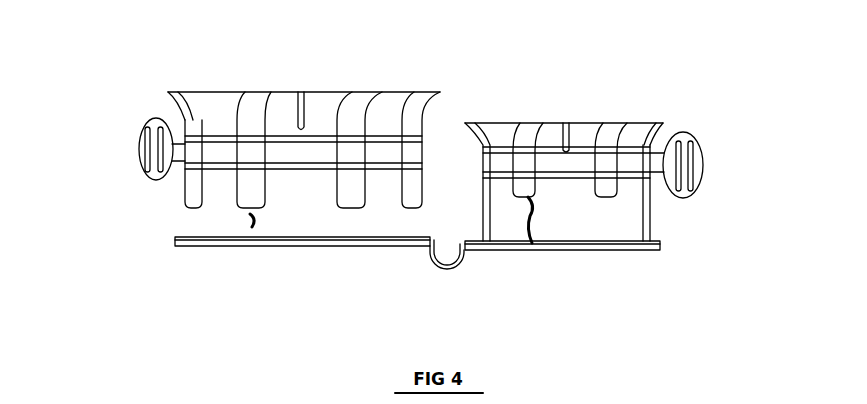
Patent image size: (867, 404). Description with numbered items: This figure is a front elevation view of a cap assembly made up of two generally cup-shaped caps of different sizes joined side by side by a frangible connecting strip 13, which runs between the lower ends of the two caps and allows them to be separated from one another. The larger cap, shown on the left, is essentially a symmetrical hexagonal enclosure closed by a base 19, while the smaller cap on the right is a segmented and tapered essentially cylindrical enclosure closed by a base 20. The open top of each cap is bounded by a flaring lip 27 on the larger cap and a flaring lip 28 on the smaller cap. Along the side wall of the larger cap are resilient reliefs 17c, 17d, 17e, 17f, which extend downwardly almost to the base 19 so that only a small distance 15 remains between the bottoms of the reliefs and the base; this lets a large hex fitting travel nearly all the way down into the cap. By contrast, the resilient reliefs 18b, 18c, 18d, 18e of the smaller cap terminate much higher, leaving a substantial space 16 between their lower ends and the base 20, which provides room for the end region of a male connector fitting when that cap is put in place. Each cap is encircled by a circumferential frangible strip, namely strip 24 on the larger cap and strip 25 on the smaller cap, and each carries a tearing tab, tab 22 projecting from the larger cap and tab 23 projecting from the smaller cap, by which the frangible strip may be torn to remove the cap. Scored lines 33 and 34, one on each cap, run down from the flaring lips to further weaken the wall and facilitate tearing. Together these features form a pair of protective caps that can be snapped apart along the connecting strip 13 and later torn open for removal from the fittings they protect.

The frangible strip 13 is at (448, 270).
The distance 15 is at (256, 226).
The distance 16 is at (535, 228).
The resilient relief 17c is at (190, 206).
The resilient relief 17d is at (252, 209).
The resilient relief 17e is at (352, 213).
The resilient relief 17f is at (411, 208).
The resilient relief 18b is at (480, 165).
The resilient relief 18c is at (525, 162).
The resilient relief 18d is at (603, 165).
The resilient relief 18e is at (652, 192).
The base 19 is at (175, 246).
The base 20 is at (662, 250).
The tearing tab 22 is at (139, 137).
The tearing tab 23 is at (704, 165).
The circumferential frangible strip 24 is at (217, 150).
The circumferential frangible strip 25 is at (577, 160).
The flaring lip 27 is at (172, 92).
The flaring lip 28 is at (661, 125).
The scored line 33 is at (300, 92).
The scored line 34 is at (566, 128).